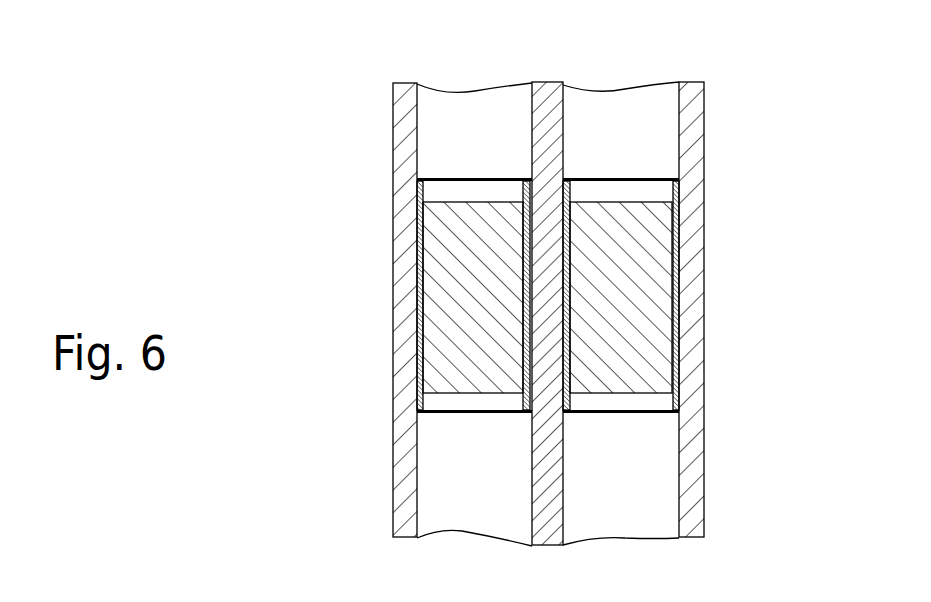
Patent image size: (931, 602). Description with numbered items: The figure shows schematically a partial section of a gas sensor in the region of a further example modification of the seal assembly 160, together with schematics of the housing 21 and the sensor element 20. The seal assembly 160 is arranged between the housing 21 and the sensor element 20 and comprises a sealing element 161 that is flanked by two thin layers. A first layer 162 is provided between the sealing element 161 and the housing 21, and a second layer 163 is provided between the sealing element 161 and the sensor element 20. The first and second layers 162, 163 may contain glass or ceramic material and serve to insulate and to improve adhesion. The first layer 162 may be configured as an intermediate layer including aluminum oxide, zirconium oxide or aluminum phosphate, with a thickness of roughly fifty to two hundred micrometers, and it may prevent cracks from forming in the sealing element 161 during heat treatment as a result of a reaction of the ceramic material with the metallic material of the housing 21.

The sensor element 20 is at (555, 112).
The housing 21 is at (408, 147).
The seal assembly 160 is at (474, 172).
The sealing element 161 is at (443, 263).
The first layer 162 is at (417, 305).
The second layer 163 is at (527, 350).